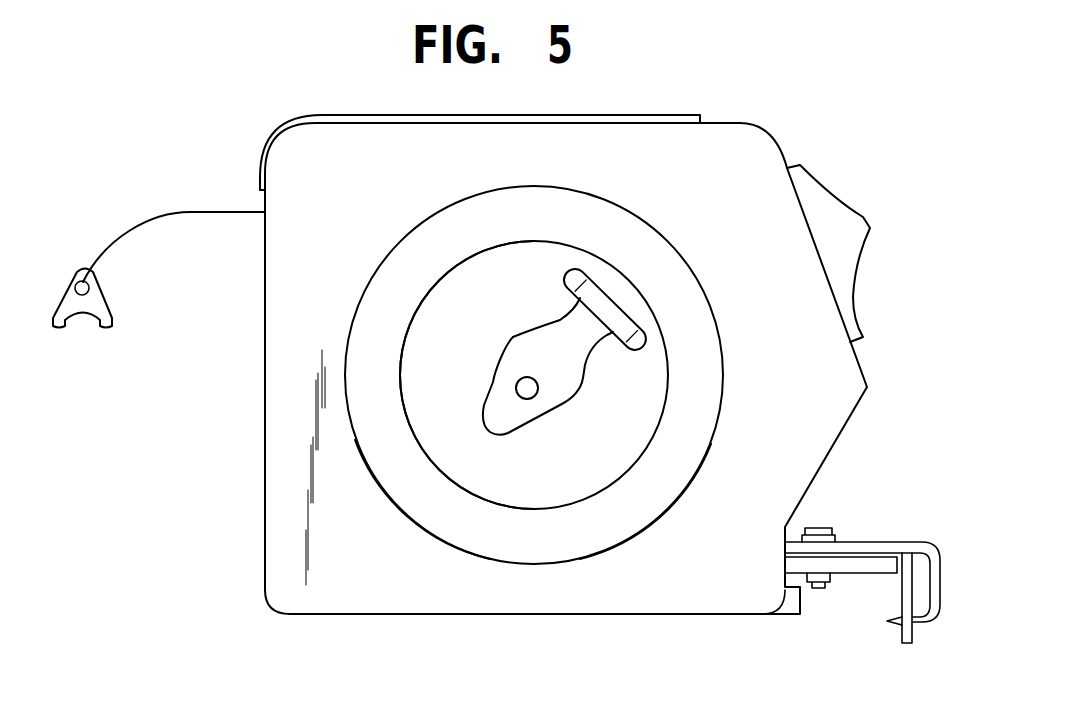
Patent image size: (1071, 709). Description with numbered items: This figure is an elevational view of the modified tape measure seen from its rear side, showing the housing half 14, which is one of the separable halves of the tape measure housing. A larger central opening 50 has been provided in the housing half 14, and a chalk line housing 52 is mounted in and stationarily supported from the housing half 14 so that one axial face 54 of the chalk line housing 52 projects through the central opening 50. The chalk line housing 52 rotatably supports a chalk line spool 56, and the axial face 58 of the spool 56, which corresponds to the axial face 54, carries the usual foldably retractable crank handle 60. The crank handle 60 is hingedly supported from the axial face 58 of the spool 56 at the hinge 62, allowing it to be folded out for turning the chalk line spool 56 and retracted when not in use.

The housing half 14 is at (275, 480).
The central opening 50 is at (662, 238).
The chalk line housing 52 is at (647, 497).
The axial face 54 is at (407, 497).
The chalk line spool 56 is at (652, 410).
The axial face of the spool 58 is at (428, 327).
The crank handle 60 is at (538, 343).
The hinge 62 is at (583, 284).